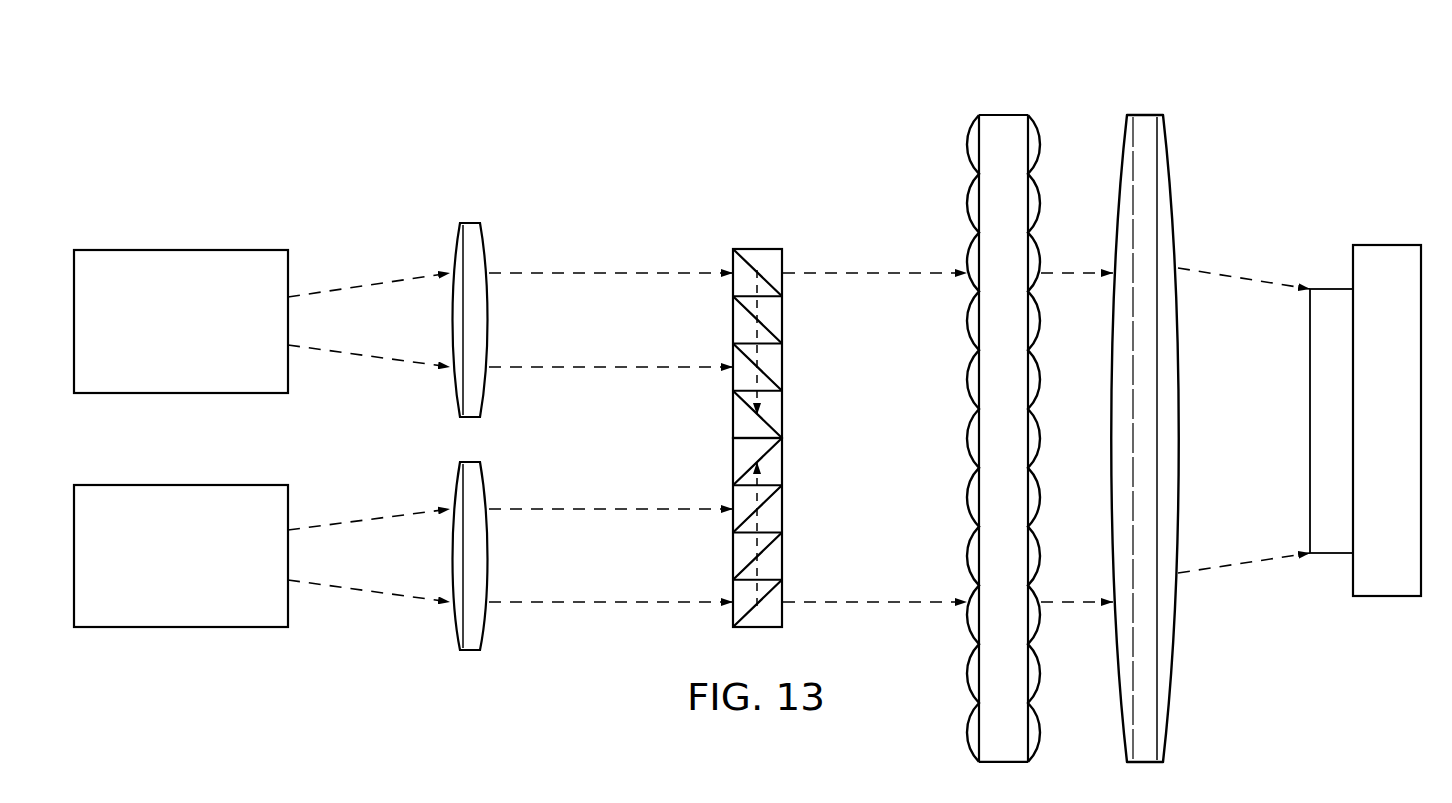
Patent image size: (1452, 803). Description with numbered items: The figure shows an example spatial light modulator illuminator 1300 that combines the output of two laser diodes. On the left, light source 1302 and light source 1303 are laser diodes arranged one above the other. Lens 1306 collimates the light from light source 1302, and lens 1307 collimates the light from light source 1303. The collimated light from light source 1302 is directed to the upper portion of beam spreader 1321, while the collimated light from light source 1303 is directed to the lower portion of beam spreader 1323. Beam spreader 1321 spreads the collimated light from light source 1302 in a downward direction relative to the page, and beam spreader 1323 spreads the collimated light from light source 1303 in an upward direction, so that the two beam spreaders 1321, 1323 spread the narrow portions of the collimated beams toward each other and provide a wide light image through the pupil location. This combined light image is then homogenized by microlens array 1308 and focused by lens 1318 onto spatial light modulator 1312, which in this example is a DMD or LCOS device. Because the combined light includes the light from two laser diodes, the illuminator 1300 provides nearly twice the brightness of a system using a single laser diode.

The spatial light modulator illuminator 1300 is at (660, 97).
The light source 1302 is at (212, 337).
The light source 1303 is at (212, 575).
The lens 1306 is at (468, 223).
The lens 1307 is at (460, 653).
The beam spreader 1321 is at (733, 320).
The beam spreader 1323 is at (733, 556).
The microlens array 1308 is at (967, 437).
The lens 1318 is at (1143, 113).
The spatial light modulator 1312 is at (1388, 245).